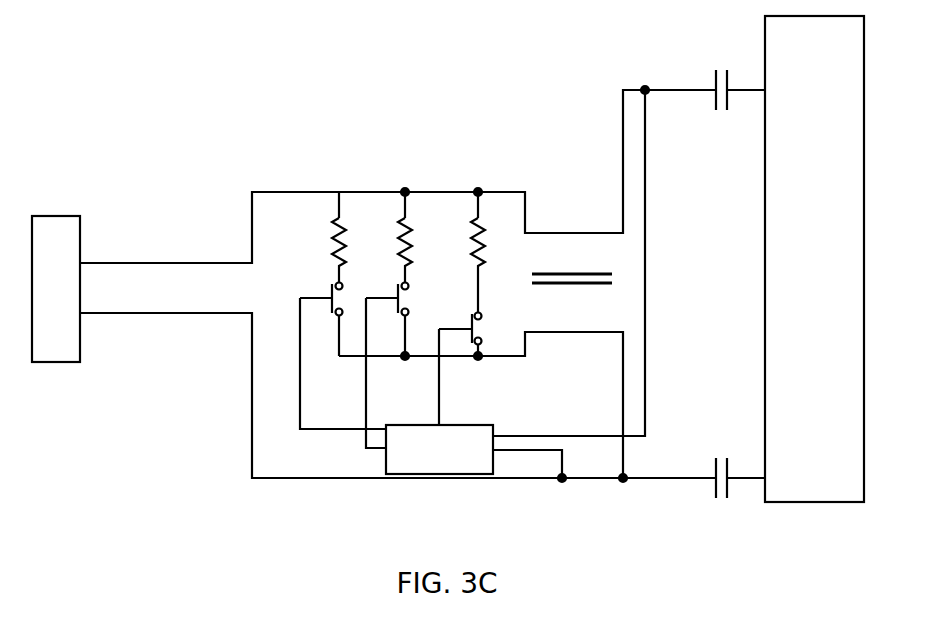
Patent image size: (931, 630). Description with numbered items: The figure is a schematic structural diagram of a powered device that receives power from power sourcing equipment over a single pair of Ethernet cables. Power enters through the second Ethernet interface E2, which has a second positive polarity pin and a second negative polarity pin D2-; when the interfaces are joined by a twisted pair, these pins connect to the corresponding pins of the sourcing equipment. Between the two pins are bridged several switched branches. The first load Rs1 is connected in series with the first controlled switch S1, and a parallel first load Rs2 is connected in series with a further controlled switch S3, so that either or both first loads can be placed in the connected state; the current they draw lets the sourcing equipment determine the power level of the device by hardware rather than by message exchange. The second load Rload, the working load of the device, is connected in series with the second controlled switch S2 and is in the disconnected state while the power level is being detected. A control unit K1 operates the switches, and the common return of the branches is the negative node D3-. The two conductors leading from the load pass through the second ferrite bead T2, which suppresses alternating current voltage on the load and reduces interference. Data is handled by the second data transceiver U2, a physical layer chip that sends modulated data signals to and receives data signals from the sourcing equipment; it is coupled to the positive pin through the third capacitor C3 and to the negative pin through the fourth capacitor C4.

The second Ethernet interface E2 is at (56, 289).
The second negative polarity pin D2- is at (398, 397).
The negative output node D3- is at (481, 405).
The second load Rload is at (304, 250).
The first load Rs1 is at (382, 250).
The first load Rs2 is at (456, 265).
The first controlled switch S1 is at (404, 366).
The second controlled switch S2 is at (343, 349).
The third switch S3 is at (477, 369).
The second ferrite bead T2 is at (572, 296).
The controller K1 is at (517, 282).
The third capacitor C3 is at (736, 105).
The fourth capacitor C4 is at (736, 494).
The second data transceiver U2 is at (814, 259).